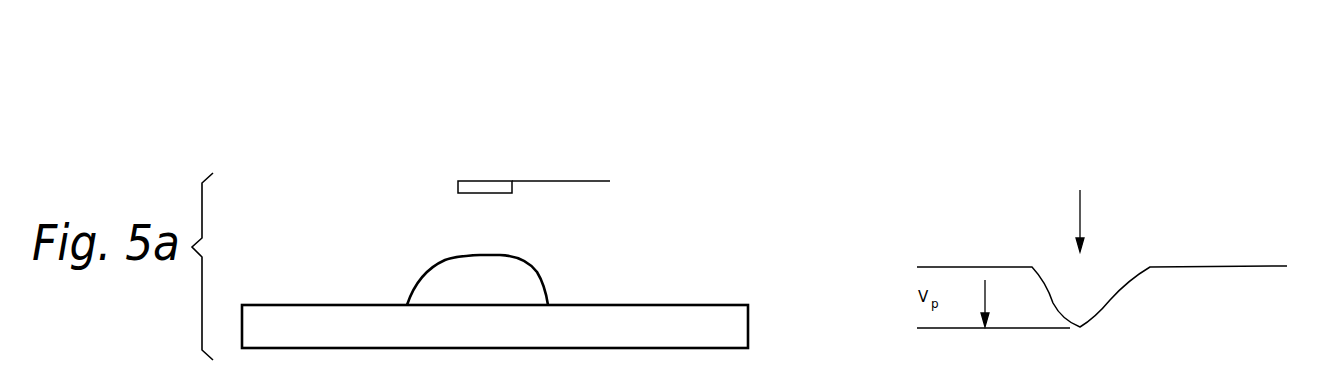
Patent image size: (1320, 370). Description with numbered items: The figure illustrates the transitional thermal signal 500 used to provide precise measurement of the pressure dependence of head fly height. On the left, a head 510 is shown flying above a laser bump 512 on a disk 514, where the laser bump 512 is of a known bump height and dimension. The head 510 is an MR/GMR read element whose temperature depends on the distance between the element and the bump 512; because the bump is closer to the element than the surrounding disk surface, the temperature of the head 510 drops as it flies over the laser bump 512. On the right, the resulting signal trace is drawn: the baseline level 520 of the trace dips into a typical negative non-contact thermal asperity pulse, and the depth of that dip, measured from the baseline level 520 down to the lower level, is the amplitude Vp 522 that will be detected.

The transitional thermal signal 500 is at (1090, 107).
The head 510 is at (467, 180).
The laser bump 512 is at (427, 268).
The disk 514 is at (682, 303).
The baseline signal level 520 is at (933, 266).
The Vp 522 is at (915, 303).